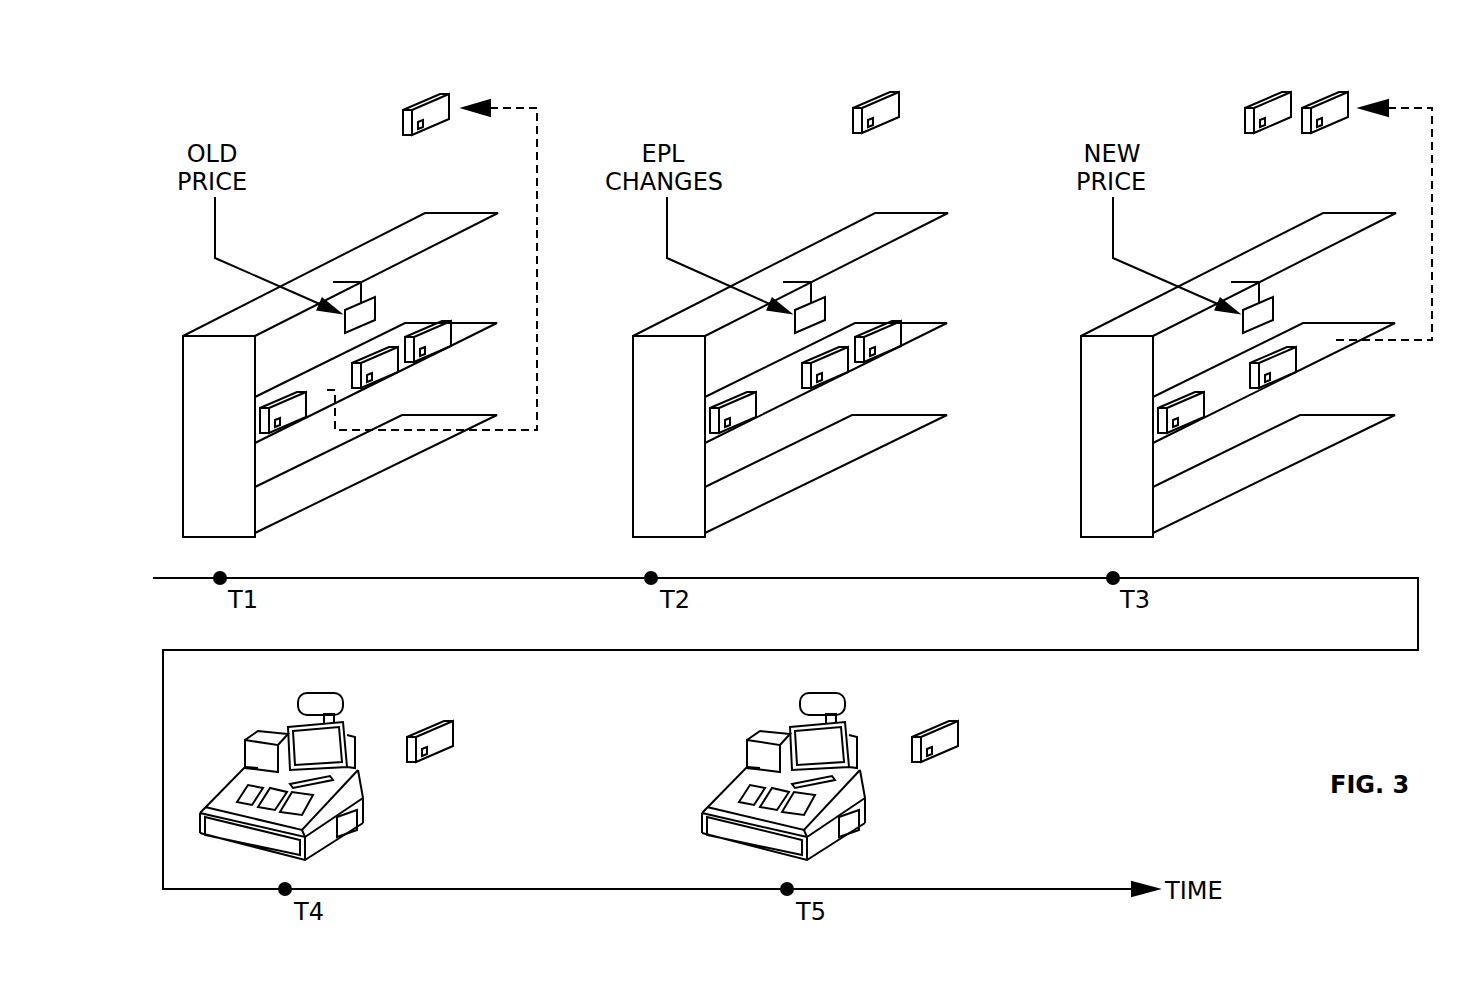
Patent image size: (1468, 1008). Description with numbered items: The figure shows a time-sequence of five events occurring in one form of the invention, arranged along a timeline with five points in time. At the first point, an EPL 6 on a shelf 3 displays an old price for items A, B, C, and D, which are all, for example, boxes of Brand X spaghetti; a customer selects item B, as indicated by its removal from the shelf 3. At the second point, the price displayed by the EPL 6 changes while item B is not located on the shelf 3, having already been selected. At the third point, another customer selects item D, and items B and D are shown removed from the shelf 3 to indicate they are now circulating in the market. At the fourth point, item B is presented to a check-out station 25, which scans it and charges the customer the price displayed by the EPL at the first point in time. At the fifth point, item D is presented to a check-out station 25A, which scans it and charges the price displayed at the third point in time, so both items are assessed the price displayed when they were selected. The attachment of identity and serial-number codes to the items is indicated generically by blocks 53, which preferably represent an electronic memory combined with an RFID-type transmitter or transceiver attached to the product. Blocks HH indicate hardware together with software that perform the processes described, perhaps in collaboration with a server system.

The shelf 3 is at (235, 384).
The EPL 6 is at (375, 306).
The blocks 53 is at (807, 421).
The item A is at (297, 422).
The item B is at (425, 100).
The item C is at (387, 378).
The item D is at (442, 347).
The check-out station 25 is at (377, 707).
The check-out station 25A is at (848, 766).
The blocks HH is at (357, 830).